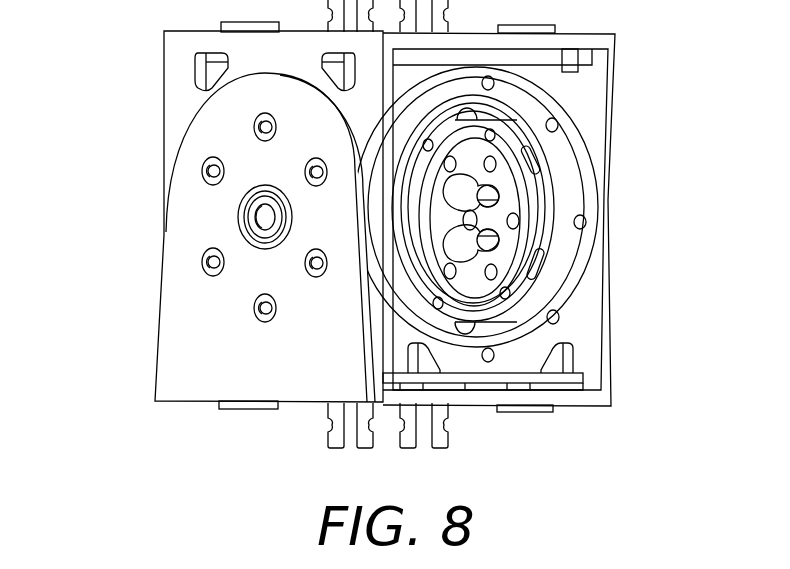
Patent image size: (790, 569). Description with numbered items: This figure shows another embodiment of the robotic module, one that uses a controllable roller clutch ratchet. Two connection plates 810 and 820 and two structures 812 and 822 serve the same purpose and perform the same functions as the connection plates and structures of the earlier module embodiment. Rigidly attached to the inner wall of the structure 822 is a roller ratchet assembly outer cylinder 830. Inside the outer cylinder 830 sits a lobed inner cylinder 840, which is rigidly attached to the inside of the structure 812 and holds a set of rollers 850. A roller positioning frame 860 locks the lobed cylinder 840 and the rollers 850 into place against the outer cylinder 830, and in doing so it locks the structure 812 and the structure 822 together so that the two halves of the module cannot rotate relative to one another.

The connection plate 810 is at (573, 327).
The structure 812 is at (173, 78).
The connection plate 820 is at (192, 403).
The structure 822 is at (173, 300).
The roller ratchet assembly outer cylinder 830 is at (547, 142).
The lobed inner cylinder 840 is at (500, 193).
The rollers 850 is at (537, 265).
The roller positioning frame 860 is at (507, 290).